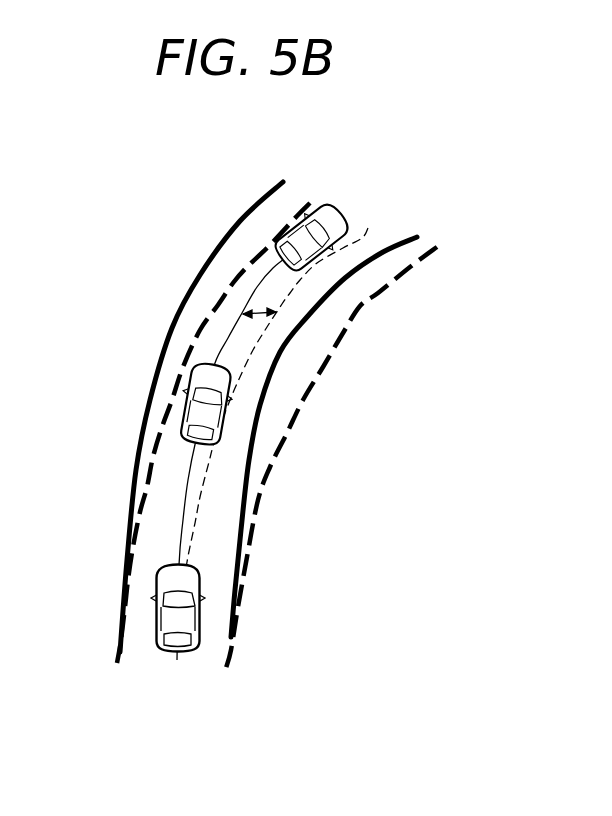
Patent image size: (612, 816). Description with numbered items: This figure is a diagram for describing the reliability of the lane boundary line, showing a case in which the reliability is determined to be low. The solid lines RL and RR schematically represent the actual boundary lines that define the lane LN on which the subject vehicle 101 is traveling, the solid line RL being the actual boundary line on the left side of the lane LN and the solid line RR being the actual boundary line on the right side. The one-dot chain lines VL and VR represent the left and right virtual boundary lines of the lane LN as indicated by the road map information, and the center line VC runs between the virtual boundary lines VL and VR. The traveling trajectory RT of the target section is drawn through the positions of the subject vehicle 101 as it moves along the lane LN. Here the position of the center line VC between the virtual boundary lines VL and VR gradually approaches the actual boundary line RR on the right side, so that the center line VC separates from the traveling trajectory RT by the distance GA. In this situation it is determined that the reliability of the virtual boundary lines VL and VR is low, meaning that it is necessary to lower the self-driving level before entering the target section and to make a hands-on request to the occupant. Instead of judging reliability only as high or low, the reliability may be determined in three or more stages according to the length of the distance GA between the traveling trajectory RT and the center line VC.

The actual boundary line RL is at (243, 218).
The actual boundary line RR is at (398, 237).
The virtual boundary line VL is at (312, 207).
The virtual boundary line VR is at (405, 278).
The center line VC is at (368, 228).
The traveling trajectory RT is at (257, 287).
The distance GA is at (256, 318).
The subject vehicle 101 is at (172, 650).
The lane LN is at (207, 645).